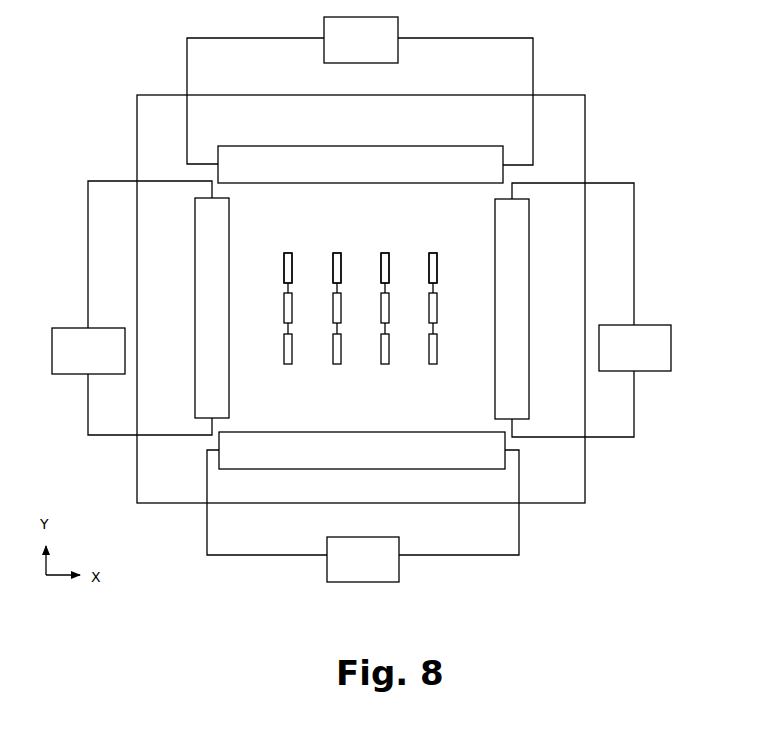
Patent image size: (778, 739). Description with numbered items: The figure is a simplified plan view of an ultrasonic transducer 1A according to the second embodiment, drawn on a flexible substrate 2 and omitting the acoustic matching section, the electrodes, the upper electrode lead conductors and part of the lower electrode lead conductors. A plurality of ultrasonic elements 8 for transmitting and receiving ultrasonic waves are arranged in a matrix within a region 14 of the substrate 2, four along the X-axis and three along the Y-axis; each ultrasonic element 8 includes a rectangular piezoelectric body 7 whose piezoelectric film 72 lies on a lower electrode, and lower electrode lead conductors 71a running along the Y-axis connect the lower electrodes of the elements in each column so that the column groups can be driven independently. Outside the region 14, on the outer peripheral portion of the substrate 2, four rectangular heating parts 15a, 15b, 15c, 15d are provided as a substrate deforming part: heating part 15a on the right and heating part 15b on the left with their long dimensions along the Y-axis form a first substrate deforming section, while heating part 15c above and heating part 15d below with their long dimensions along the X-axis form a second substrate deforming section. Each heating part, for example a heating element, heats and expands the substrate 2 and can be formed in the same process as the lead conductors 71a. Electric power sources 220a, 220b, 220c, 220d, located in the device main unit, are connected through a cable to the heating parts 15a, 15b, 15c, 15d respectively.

The ultrasonic transducer 1A is at (572, 70).
The substrate 2 is at (585, 121).
The piezoelectric body 7 is at (289, 262).
The ultrasonic element 8 is at (287, 250).
The region 14 is at (416, 353).
The heating part 15a is at (516, 246).
The heating part 15b is at (207, 231).
The heating part 15c is at (453, 160).
The heating part 15d is at (467, 455).
The lower electrode lead conductor 71a is at (339, 289).
The piezoelectric film 72 is at (291, 272).
The electric power source 220a is at (655, 372).
The electric power source 220b is at (62, 375).
The electric power source 220c is at (398, 28).
The electric power source 220d is at (399, 581).